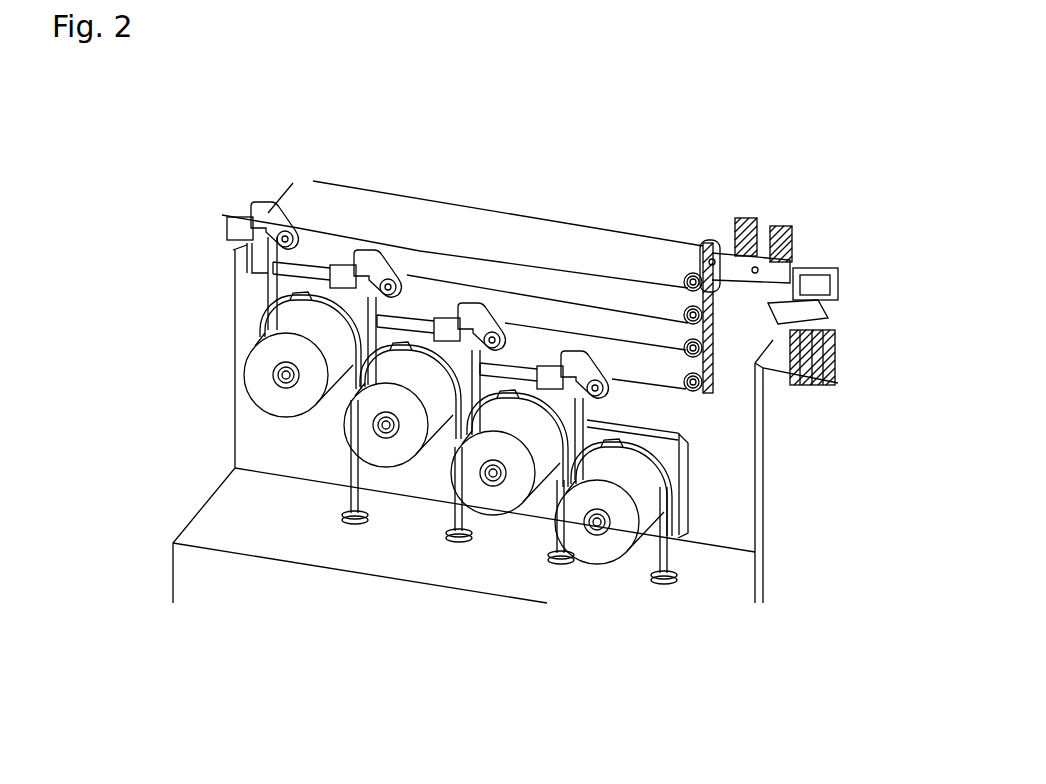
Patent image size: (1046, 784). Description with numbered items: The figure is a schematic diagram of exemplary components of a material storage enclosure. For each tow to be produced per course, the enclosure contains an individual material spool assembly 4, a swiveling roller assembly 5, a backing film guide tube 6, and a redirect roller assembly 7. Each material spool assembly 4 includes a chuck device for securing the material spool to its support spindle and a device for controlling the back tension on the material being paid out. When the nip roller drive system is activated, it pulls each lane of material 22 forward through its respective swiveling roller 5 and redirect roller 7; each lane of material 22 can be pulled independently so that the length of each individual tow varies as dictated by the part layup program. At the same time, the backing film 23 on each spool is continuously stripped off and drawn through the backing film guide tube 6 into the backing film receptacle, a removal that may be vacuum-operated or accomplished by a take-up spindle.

The material spool assembly 4 is at (268, 397).
The swiveling roller assembly 5 is at (258, 194).
The backing film guide tube 6 is at (348, 462).
The redirect roller assembly 7 is at (683, 273).
The lane of material 22 is at (531, 283).
The backing film 23 is at (268, 293).